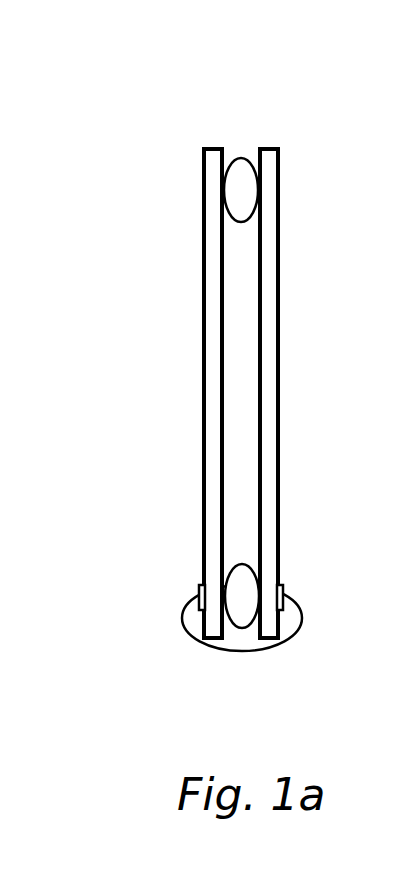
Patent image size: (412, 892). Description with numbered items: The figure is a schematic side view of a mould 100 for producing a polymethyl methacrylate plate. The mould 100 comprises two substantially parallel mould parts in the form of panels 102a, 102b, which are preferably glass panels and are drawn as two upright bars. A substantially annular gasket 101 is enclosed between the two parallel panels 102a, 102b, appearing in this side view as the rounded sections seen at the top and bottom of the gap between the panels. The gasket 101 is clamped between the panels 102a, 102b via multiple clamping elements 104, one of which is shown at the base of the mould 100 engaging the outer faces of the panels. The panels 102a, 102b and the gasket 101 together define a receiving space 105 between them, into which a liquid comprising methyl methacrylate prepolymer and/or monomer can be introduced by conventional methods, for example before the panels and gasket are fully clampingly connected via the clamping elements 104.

The mould 100 is at (300, 132).
The gasket 101 is at (240, 187).
The panel 102a is at (213, 373).
The panel 102b is at (271, 373).
The clamping element 104 is at (189, 589).
The receiving space 105 is at (241, 445).